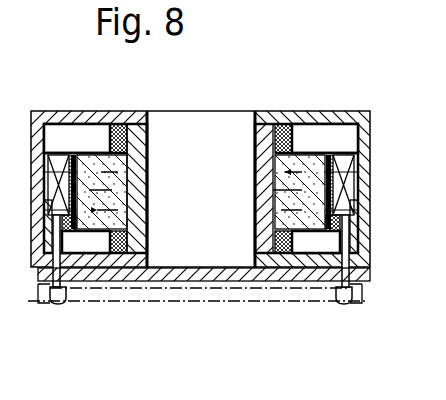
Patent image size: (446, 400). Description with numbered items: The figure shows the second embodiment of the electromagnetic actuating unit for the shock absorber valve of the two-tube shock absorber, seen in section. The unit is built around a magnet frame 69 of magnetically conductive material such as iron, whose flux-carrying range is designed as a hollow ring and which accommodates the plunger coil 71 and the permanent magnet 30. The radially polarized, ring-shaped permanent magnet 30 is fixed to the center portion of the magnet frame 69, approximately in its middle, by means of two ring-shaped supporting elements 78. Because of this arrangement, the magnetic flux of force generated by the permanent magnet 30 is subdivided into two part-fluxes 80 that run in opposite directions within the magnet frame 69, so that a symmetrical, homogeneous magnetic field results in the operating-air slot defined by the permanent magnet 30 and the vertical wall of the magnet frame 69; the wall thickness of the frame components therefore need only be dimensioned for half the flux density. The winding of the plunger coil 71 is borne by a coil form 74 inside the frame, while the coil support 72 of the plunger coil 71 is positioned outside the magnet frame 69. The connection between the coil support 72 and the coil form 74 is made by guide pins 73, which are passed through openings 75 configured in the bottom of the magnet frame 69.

The permanent magnet 30 is at (308, 170).
The magnet frame 69 is at (291, 123).
The plunger coil 71 is at (354, 168).
The coil support 72 is at (192, 272).
The guide pins 73 is at (356, 252).
The coil form 74 is at (352, 209).
The openings 75 is at (64, 268).
The ring-shaped supporting elements 78 is at (115, 124).
The part-fluxes 80 is at (50, 115).